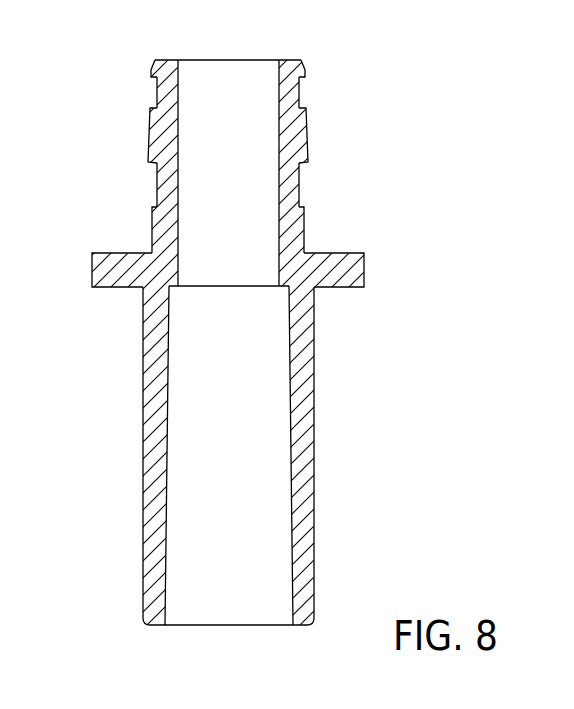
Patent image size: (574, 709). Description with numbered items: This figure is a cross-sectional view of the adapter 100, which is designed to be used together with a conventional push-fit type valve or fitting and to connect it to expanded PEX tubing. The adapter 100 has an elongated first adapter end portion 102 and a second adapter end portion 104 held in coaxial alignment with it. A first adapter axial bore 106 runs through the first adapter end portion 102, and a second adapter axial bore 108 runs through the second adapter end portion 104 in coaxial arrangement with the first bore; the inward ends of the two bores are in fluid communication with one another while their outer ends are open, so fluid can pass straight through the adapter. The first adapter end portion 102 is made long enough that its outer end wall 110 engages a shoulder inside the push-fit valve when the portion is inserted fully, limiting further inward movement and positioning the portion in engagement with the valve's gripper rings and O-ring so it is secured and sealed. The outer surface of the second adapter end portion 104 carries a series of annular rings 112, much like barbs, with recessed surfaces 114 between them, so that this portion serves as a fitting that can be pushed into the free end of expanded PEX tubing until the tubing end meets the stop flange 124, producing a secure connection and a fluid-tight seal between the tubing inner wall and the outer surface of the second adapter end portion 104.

The adapter 100 is at (287, 343).
The first adapter end portion 102 is at (264, 455).
The second adapter end portion 104 is at (226, 156).
The first adapter axial bore 106 is at (291, 490).
The second adapter axial bore 108 is at (277, 102).
The outer end wall 110 is at (290, 60).
The annular rings 112 is at (152, 67).
The recessed surfaces 114 is at (157, 196).
The stop flange 124 is at (97, 270).